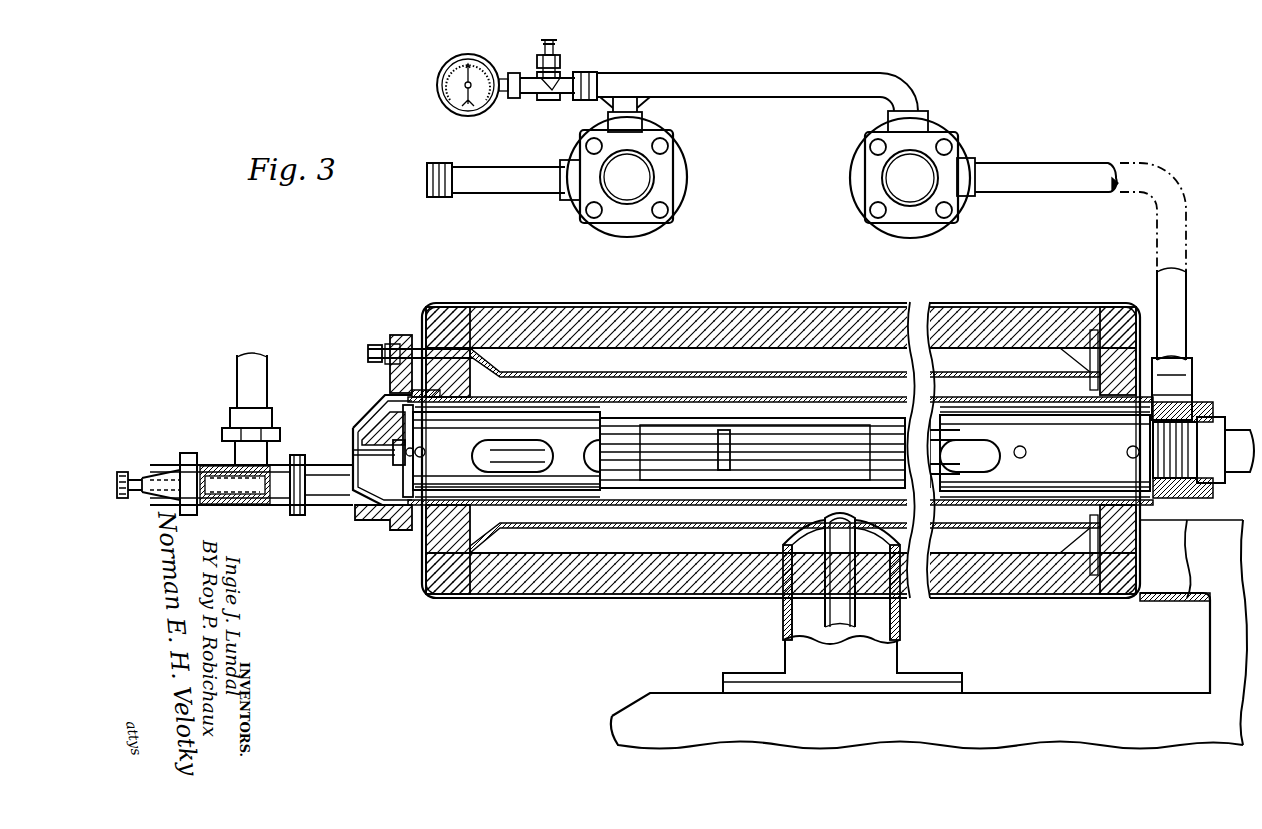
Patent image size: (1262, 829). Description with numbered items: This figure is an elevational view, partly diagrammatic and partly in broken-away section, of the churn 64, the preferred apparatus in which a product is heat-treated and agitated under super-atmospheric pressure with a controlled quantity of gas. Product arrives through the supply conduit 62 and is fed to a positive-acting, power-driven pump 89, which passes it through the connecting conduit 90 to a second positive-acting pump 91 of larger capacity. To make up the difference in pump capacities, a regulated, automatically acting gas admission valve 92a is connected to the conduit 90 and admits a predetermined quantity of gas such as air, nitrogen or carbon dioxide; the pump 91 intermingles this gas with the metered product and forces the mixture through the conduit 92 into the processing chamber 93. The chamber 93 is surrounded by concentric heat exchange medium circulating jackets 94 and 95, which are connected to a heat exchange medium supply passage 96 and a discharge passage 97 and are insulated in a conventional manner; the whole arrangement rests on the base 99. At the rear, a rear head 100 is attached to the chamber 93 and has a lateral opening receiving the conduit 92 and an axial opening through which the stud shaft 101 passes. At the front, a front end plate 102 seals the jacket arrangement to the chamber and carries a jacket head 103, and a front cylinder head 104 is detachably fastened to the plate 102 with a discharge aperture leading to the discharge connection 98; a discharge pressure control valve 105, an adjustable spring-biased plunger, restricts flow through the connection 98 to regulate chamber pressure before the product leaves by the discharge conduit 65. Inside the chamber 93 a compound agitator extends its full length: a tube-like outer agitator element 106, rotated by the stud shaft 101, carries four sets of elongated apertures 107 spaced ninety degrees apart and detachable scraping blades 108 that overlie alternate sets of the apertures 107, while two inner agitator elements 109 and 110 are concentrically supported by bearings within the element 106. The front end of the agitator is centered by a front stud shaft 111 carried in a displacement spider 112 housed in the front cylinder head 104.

The supply conduit 62 is at (497, 186).
The churn 64 is at (760, 303).
The discharge conduit 65 is at (245, 366).
The positive-acting power-driven pump 89 is at (680, 177).
The connecting conduit 90 is at (770, 66).
The second positive-acting power-driven pump 91 is at (870, 176).
The conduit 92 is at (1091, 171).
The gas admission valve 92a is at (566, 72).
The processing chamber 93 is at (733, 505).
The heat exchange medium circulating jacket 94 is at (731, 372).
The heat exchange medium circulating jacket 95 is at (781, 450).
The heat exchange medium supply passage 96 is at (858, 597).
The heat exchange medium discharge passage 97 is at (895, 612).
The discharge connection 98 is at (298, 458).
The base 99 is at (1157, 698).
The rear head 100 is at (1195, 405).
The stud shaft 101 is at (1248, 472).
The front end plate 102 is at (452, 553).
The jacket head 103 is at (437, 599).
The front cylinder head 104 is at (368, 415).
The discharge pressure control valve 105 is at (252, 505).
The outer agitator element 106 is at (516, 431).
The elongated apertures 107 is at (546, 447).
The scraping blades 108 is at (436, 413).
The inner agitator element 109 is at (882, 432).
The inner agitator element 110 is at (930, 478).
The front stud shaft 111 is at (375, 448).
The displacement spider 112 is at (380, 394).